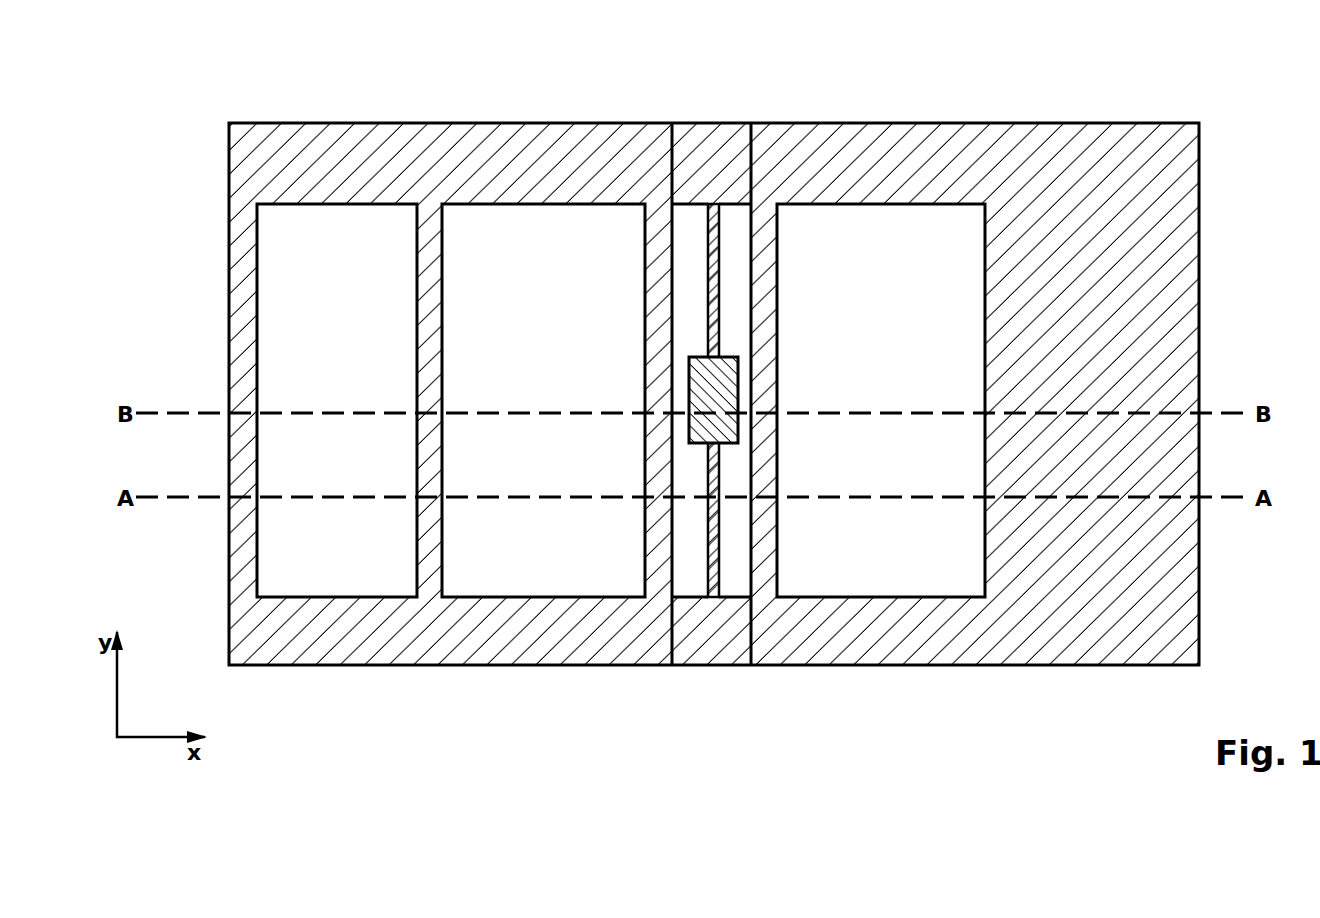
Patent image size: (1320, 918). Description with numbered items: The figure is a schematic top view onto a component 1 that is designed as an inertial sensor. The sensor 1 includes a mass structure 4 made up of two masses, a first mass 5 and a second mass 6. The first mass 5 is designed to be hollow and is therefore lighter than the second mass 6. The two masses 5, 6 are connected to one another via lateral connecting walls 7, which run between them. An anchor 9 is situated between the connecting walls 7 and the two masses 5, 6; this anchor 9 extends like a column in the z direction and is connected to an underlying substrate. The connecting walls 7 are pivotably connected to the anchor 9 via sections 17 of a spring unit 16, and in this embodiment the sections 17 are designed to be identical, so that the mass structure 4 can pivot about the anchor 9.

The component 1 is at (122, 74).
The mass structure 4 is at (714, 396).
The first mass 5 is at (348, 183).
The second mass 6 is at (1050, 182).
The connecting walls 7 is at (717, 158).
The anchor 9 is at (730, 355).
The spring unit 16 is at (687, 396).
The sections 17 is at (705, 262).